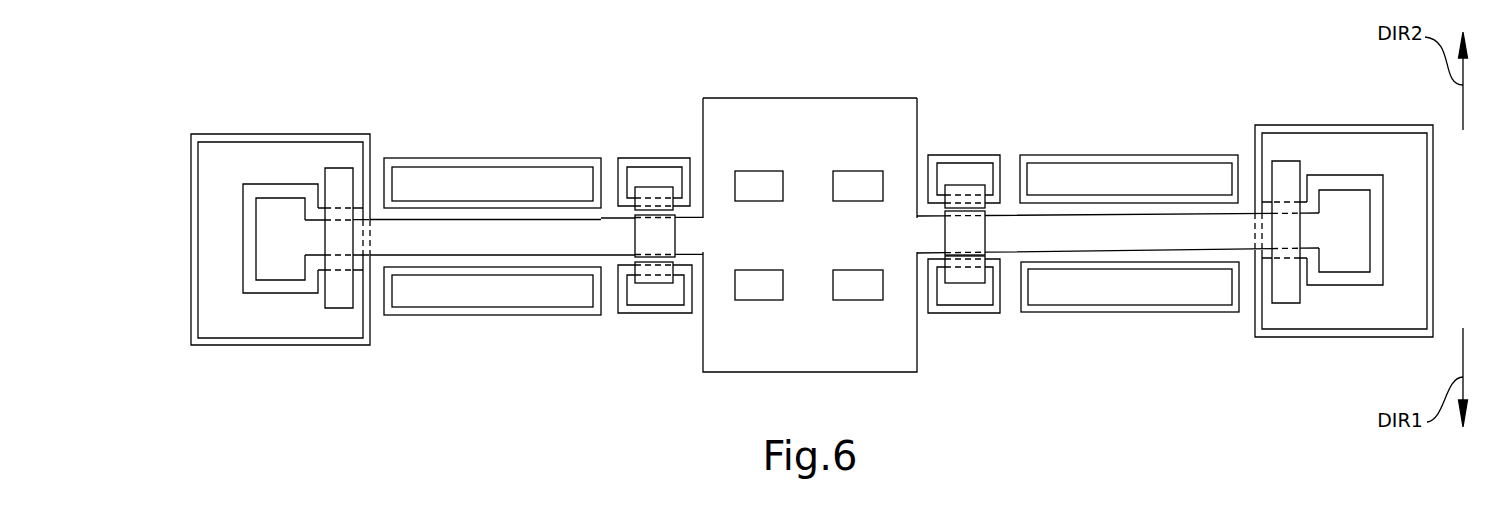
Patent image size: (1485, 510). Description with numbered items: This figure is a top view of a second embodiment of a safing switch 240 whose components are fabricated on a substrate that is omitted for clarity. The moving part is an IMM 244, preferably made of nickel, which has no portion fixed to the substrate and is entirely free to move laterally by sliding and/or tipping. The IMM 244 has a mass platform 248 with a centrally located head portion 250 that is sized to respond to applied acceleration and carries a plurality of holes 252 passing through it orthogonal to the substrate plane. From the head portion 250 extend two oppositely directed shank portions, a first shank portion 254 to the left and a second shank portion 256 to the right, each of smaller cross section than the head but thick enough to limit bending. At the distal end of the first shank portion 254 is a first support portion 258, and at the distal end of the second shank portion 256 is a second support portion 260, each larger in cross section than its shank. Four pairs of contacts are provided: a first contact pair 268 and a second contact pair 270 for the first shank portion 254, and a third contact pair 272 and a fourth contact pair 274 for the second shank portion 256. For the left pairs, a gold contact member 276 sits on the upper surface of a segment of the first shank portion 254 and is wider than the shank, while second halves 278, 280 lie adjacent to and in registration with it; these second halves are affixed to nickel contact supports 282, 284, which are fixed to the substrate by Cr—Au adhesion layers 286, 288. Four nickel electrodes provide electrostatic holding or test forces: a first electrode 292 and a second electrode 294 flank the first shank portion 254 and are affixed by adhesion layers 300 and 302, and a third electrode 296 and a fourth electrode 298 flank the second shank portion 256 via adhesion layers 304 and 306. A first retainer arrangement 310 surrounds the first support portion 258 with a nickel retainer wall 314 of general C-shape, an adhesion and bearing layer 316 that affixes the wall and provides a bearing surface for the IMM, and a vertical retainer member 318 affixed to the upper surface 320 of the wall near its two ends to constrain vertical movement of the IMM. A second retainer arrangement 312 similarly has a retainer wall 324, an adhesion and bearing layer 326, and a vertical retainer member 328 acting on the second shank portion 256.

The safing switch 240 is at (426, 53).
The IMM 244 is at (695, 63).
The mass platform 248 is at (751, 86).
The head portion 250 is at (867, 108).
The holes 252 is at (862, 178).
The first shank portion 254 is at (388, 238).
The second shank portion 256 is at (1235, 232).
The first support portion 258 is at (290, 268).
The second support portion 260 is at (1336, 258).
The first contact pair 268 is at (621, 208).
The second contact pair 270 is at (622, 264).
The third contact pair 272 is at (999, 205).
The fourth contact pair 274 is at (1001, 262).
The contact member 276 is at (647, 237).
The second half of first contact pair 278 is at (657, 192).
The second half of second contact pair 280 is at (657, 280).
The contact support 282 is at (640, 172).
The contact support 284 is at (640, 298).
The adhesion layer 286 is at (680, 160).
The adhesion layer 288 is at (678, 310).
The first electrode 292 is at (465, 185).
The second electrode 294 is at (466, 288).
The third electrode 296 is at (1103, 180).
The fourth electrode 298 is at (1103, 288).
The adhesion layer 300 is at (527, 160).
The adhesion layer 302 is at (527, 312).
The adhesion layer 304 is at (1165, 158).
The adhesion layer 306 is at (1165, 308).
The first retainer arrangement 310 is at (190, 118).
The second retainer arrangement 312 is at (1388, 109).
The retainer wall 314 is at (219, 318).
The adhesion and bearing layer 316 is at (325, 168).
The vertical retainer member 318 is at (338, 305).
The upper surface of retainer wall 320 is at (258, 160).
The retainer wall 324 is at (1404, 309).
The adhesion and bearing layer 326 is at (1307, 137).
The vertical retainer member 328 is at (1287, 295).